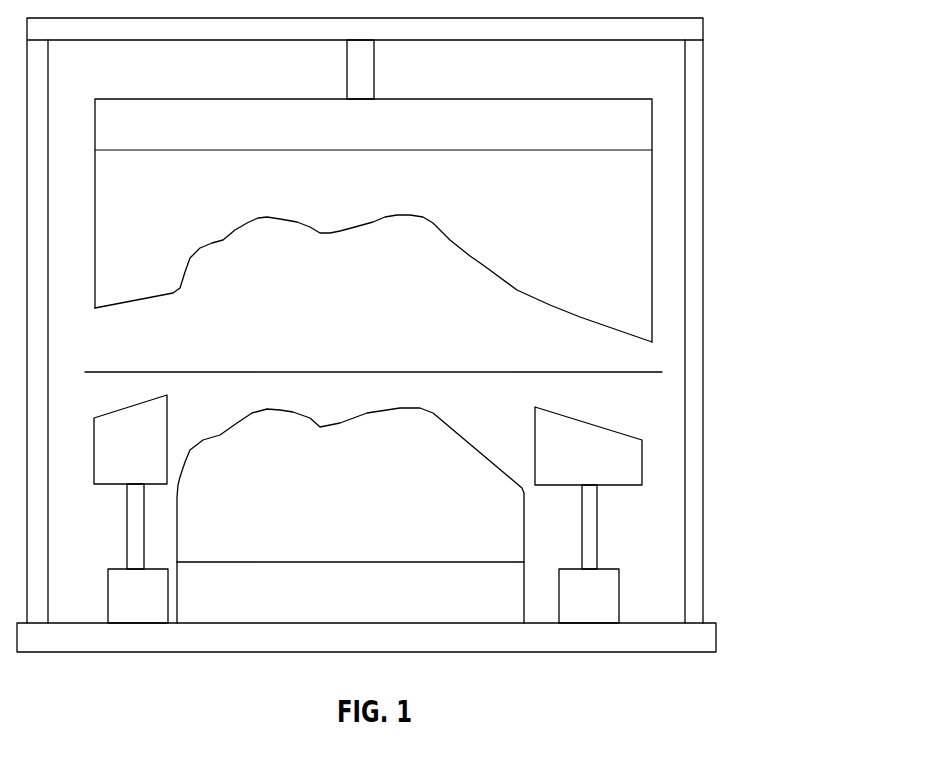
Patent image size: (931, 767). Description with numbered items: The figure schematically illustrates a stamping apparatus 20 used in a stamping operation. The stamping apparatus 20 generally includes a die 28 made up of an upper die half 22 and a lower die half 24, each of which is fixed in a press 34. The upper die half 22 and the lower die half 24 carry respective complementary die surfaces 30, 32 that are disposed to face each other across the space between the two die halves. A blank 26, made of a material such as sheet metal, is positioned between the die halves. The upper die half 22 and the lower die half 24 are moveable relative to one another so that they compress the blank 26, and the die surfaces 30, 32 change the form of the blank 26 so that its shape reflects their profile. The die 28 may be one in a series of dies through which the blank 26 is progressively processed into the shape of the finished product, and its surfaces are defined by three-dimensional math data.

The stamping apparatus 20 is at (722, 114).
The press 34 is at (707, 227).
The upper die half 22 is at (652, 247).
The die 28 is at (577, 219).
The die surface 30 is at (483, 265).
The die surface 32 is at (365, 413).
The blank 26 is at (628, 372).
The lower die half 24 is at (524, 528).